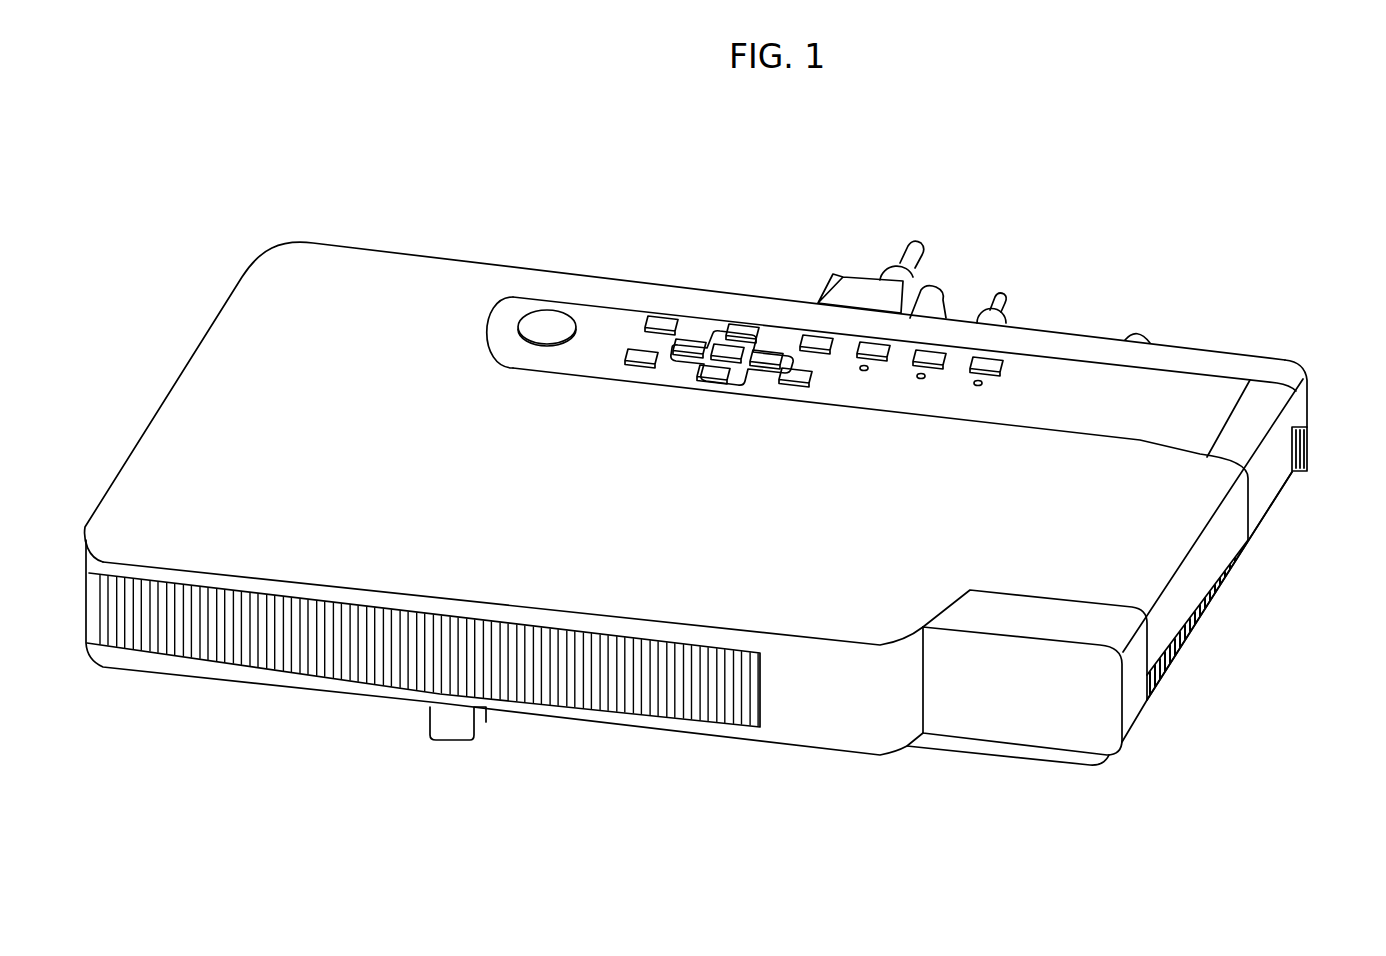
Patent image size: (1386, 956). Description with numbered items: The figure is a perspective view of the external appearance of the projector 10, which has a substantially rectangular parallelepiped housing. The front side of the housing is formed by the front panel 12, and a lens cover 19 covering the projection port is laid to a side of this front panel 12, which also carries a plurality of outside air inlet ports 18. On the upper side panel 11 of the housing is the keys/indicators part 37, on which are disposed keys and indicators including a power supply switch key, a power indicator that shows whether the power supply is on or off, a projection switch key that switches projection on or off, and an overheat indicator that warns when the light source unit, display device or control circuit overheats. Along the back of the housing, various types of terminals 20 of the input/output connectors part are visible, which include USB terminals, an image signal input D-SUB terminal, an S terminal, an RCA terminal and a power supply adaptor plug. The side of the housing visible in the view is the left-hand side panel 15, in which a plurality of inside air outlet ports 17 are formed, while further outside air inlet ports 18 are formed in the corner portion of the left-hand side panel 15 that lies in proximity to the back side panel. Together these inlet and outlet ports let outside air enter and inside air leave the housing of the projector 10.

The projector 10 is at (645, 200).
The upper side panel 11 is at (453, 262).
The front panel 12 is at (810, 730).
The left-hand side panel 15 is at (1200, 565).
The inside air outlet ports 17 is at (1185, 640).
The outside air inlet ports 18 is at (692, 710).
The lens cover 19 is at (1065, 723).
The terminals 20 is at (952, 247).
The keys/indicators part 37 is at (740, 283).